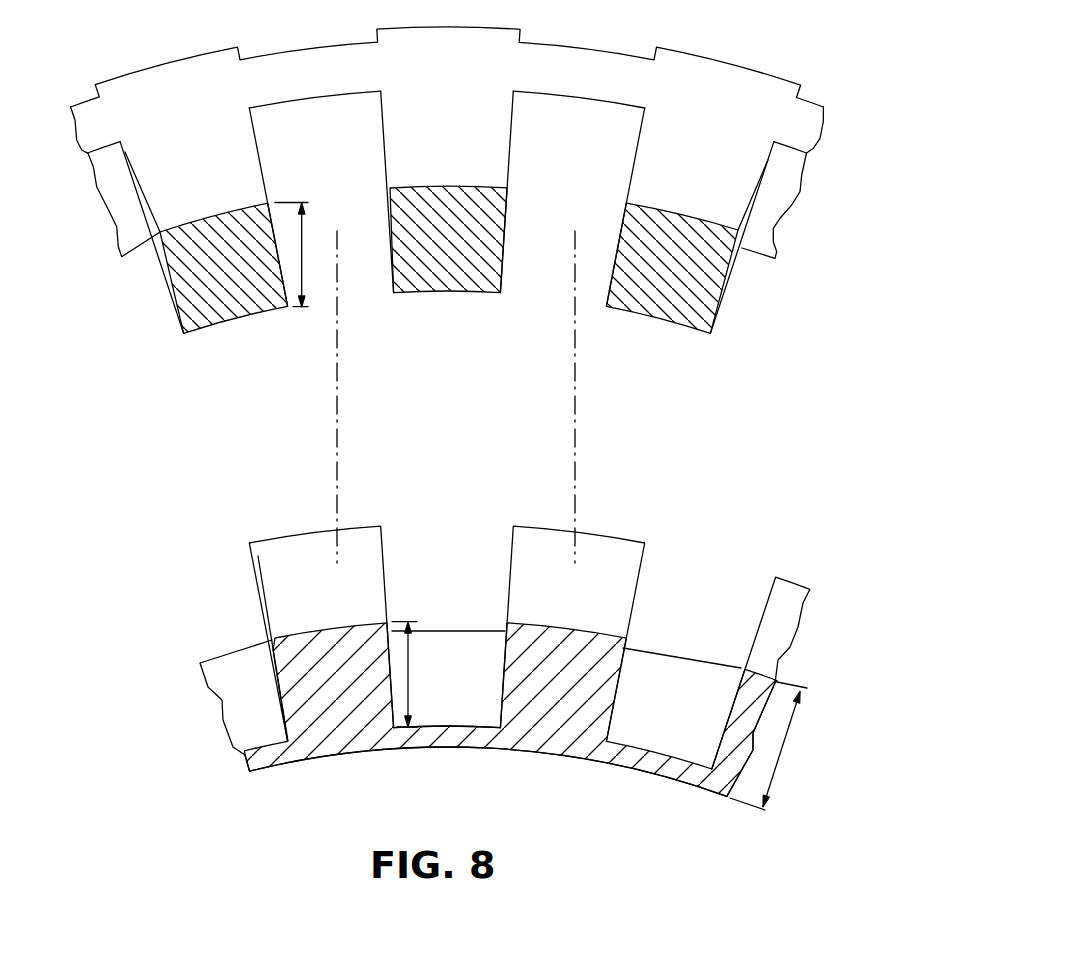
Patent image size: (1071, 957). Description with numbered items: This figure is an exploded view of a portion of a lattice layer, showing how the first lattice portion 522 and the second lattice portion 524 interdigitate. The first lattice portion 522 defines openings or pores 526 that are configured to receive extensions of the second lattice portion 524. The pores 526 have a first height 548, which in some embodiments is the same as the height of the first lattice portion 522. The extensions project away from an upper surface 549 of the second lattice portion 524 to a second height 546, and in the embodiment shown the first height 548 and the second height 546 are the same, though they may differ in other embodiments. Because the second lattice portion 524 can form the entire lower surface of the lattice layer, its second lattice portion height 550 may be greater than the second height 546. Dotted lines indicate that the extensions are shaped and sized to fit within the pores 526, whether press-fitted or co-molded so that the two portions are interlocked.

The first lattice portion 522 is at (697, 85).
The second lattice portion 524 is at (285, 550).
The pores 526 is at (359, 280).
The second height 546 is at (408, 660).
The first height 548 is at (302, 253).
The upper surface 549 is at (468, 705).
The second lattice portion height 550 is at (782, 753).